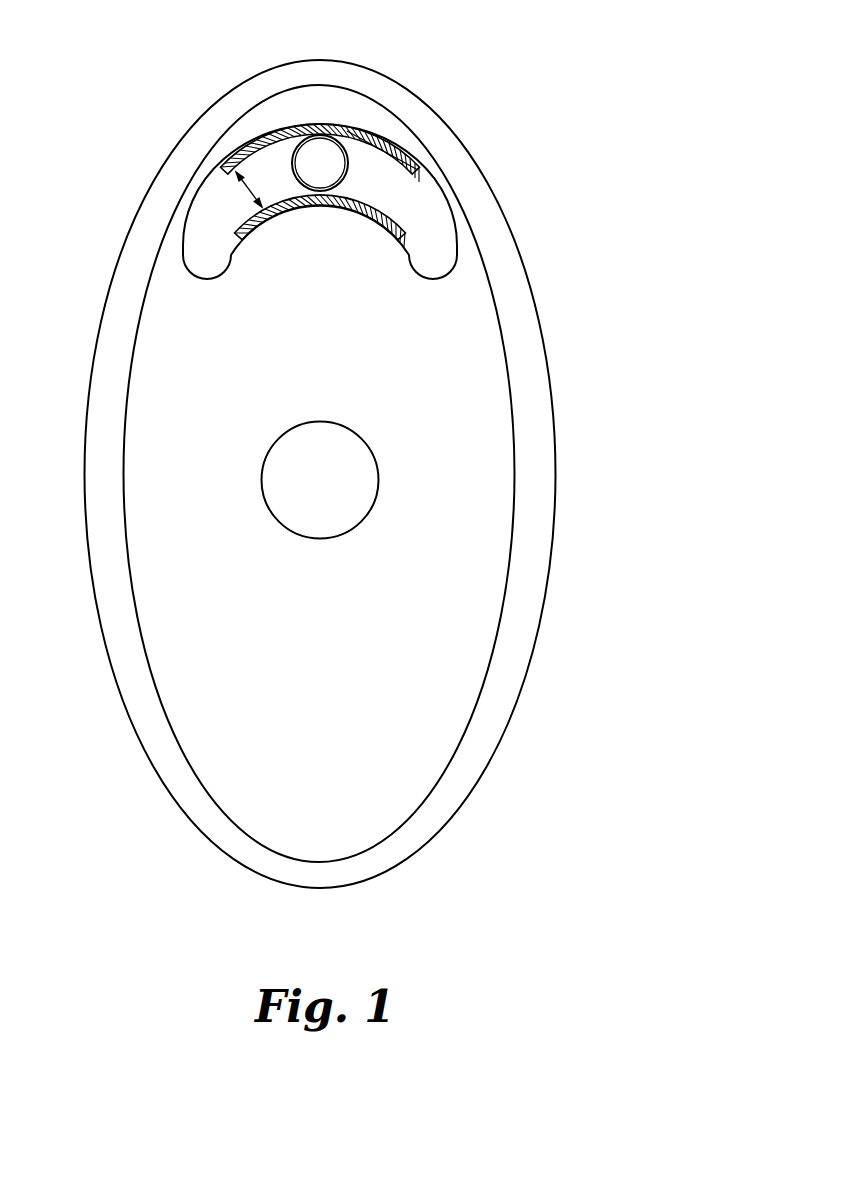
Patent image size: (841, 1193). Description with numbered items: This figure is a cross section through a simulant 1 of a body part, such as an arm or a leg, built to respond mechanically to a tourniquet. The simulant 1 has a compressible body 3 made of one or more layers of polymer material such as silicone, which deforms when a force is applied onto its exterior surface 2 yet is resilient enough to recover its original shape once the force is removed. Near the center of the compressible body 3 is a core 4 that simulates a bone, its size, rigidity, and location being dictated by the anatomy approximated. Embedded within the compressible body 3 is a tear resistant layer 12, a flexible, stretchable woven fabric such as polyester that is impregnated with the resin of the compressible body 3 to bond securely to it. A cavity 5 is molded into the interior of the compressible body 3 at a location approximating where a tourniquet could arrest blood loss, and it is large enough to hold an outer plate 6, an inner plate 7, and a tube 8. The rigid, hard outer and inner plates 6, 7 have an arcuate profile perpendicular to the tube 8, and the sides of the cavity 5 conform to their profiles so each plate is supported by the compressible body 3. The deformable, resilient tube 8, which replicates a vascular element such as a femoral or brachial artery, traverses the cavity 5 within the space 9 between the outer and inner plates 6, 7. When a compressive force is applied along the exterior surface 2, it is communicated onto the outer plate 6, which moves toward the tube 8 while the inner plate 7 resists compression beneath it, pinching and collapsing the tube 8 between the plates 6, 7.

The simulant 1 is at (324, 453).
The exterior surface 2 is at (157, 175).
The compressible body 3 is at (230, 672).
The core 4 is at (363, 467).
The cavity 5 is at (443, 227).
The outer plate 6 is at (273, 133).
The inner plate 7 is at (237, 228).
The tube 8 is at (350, 128).
The space 9 is at (249, 190).
The tear resistant layer 12 is at (508, 577).